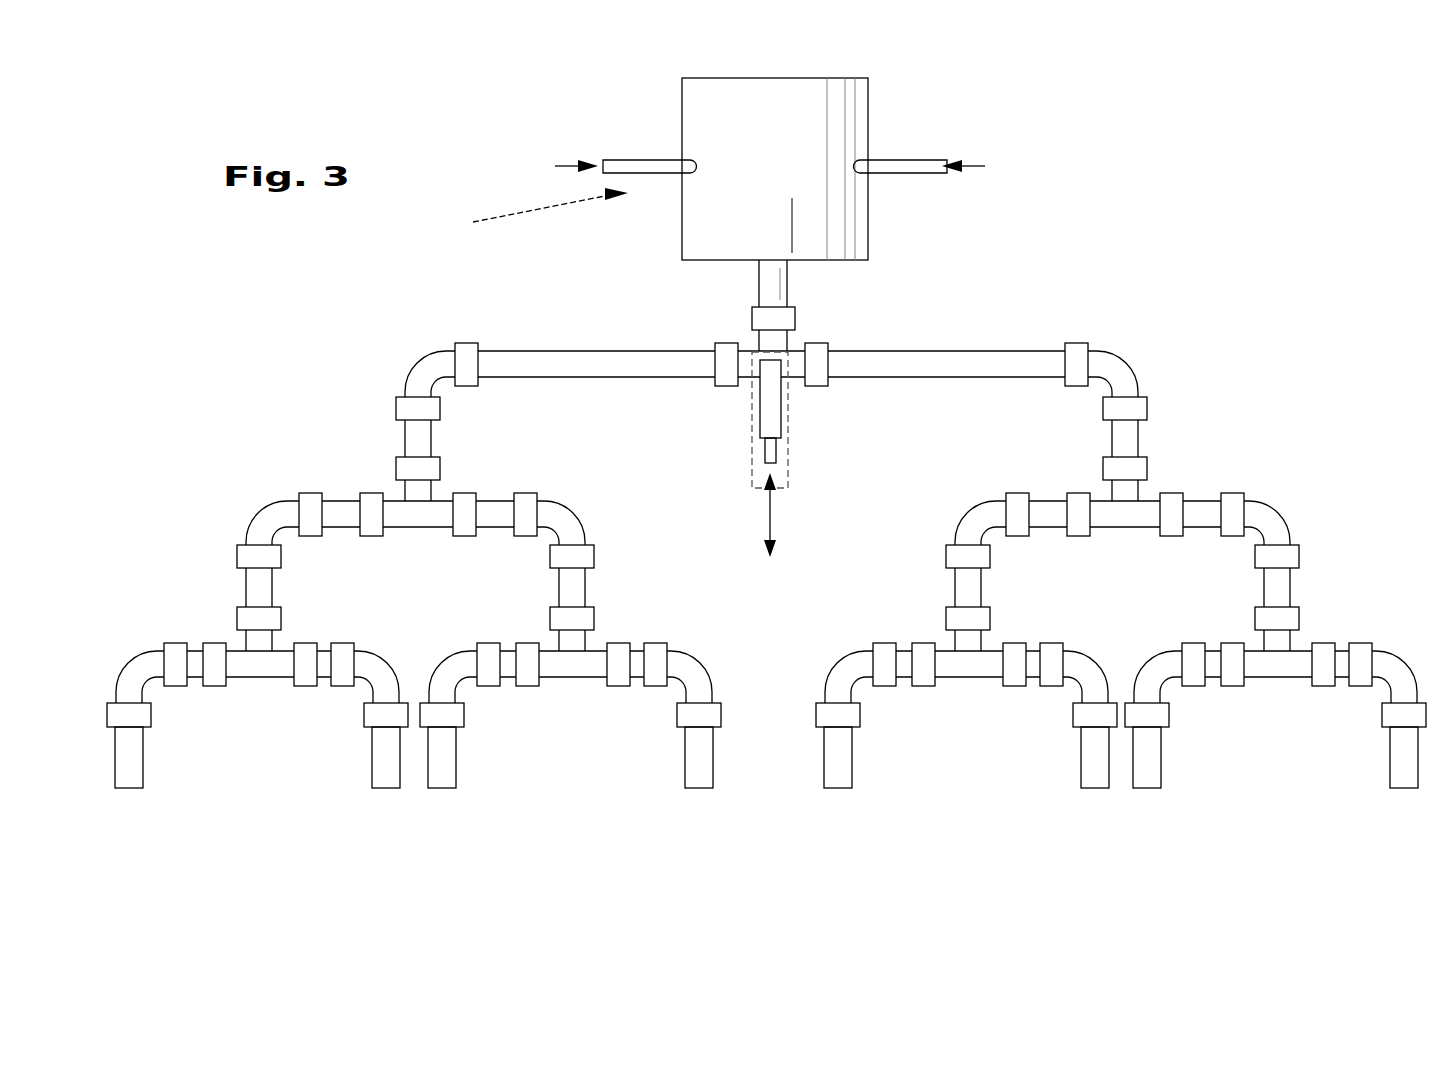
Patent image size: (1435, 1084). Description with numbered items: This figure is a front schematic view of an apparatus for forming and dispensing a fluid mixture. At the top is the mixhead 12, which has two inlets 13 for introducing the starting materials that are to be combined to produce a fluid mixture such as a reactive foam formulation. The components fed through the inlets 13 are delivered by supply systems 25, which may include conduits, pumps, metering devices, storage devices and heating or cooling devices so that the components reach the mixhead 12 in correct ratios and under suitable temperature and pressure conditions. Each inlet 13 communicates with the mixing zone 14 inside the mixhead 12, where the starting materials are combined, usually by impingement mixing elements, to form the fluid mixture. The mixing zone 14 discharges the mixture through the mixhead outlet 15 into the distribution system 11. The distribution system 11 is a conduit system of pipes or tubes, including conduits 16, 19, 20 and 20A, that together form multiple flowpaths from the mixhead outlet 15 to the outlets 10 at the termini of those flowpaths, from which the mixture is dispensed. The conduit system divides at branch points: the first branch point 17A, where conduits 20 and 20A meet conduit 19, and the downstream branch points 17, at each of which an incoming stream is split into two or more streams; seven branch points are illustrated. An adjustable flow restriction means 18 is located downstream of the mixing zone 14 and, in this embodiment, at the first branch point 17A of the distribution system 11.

The outlets 10 is at (128, 788).
The distribution system 11 is at (1163, 297).
The mixhead 12 is at (532, 213).
The inlets 13 is at (688, 160).
The mixing zone 14 is at (790, 180).
The mixhead outlet 15 is at (787, 263).
The conduits 16 is at (335, 510).
The downstream branch points 17 is at (415, 505).
The first branch point 17A is at (767, 353).
The adjustable flow restriction means 18 is at (782, 427).
The conduit 19 is at (770, 285).
The conduit 20 is at (548, 352).
The conduit 20A is at (1027, 350).
The supply systems 25 is at (617, 160).